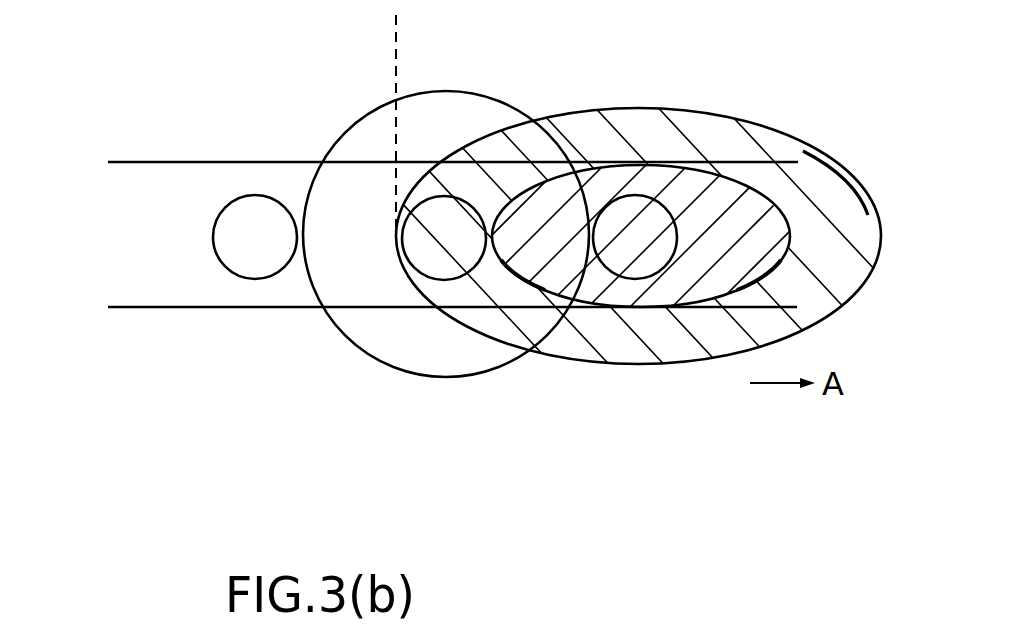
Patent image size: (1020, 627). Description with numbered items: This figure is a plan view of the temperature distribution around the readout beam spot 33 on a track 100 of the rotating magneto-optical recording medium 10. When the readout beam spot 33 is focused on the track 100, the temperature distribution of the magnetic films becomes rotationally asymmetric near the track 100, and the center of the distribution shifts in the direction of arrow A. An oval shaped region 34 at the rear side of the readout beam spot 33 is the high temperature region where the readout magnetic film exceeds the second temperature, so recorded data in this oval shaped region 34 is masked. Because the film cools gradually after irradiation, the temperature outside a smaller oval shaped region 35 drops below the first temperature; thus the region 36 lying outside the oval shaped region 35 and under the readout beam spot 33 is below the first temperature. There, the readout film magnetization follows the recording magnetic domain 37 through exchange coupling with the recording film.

The magneto-optical recording medium 10 is at (204, 156).
The track 100 is at (192, 297).
The region 36 is at (357, 327).
The recording magnetic domain 37 is at (437, 263).
The oval shaped region 35 is at (505, 295).
The readout beam spot 33 is at (593, 263).
The oval shaped region 34 is at (668, 293).